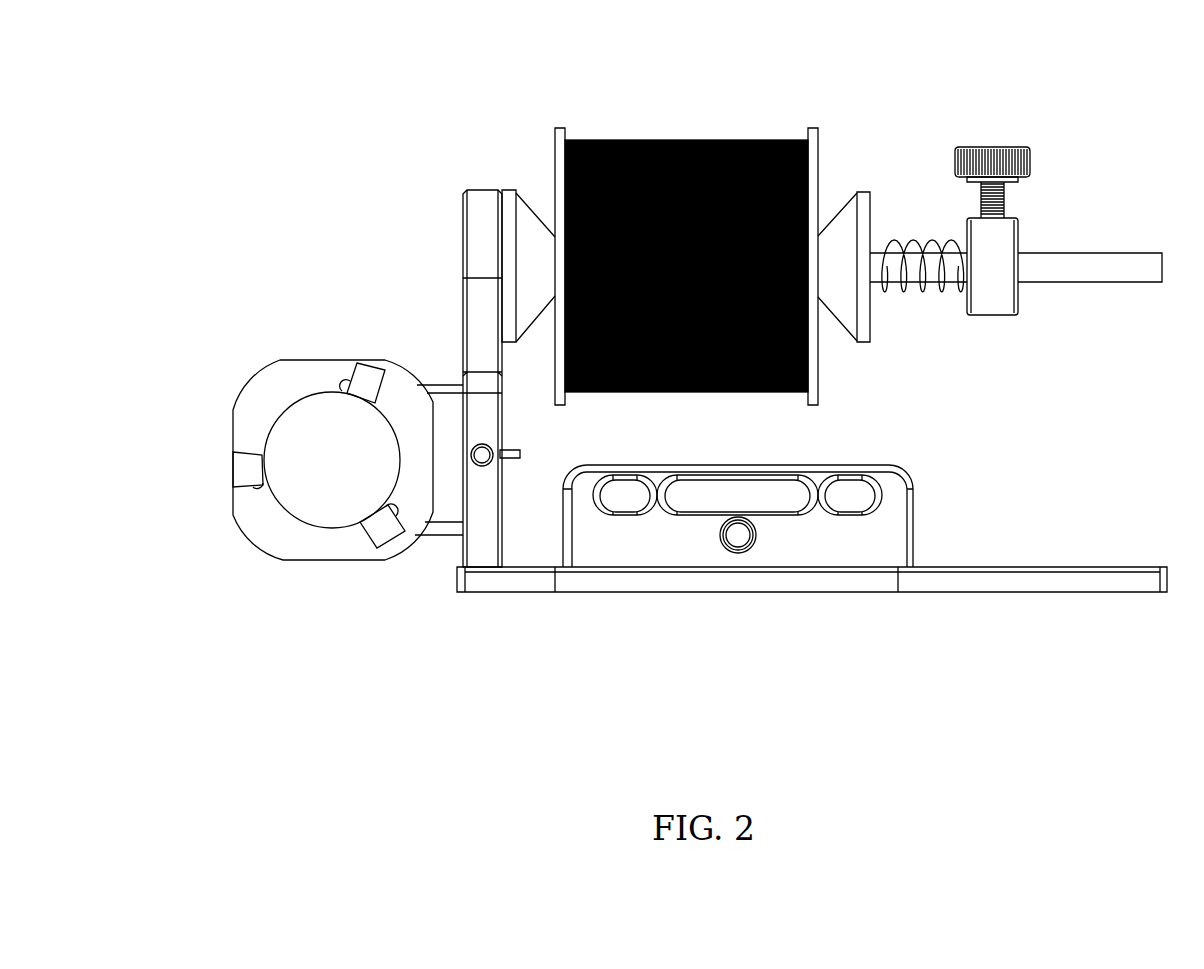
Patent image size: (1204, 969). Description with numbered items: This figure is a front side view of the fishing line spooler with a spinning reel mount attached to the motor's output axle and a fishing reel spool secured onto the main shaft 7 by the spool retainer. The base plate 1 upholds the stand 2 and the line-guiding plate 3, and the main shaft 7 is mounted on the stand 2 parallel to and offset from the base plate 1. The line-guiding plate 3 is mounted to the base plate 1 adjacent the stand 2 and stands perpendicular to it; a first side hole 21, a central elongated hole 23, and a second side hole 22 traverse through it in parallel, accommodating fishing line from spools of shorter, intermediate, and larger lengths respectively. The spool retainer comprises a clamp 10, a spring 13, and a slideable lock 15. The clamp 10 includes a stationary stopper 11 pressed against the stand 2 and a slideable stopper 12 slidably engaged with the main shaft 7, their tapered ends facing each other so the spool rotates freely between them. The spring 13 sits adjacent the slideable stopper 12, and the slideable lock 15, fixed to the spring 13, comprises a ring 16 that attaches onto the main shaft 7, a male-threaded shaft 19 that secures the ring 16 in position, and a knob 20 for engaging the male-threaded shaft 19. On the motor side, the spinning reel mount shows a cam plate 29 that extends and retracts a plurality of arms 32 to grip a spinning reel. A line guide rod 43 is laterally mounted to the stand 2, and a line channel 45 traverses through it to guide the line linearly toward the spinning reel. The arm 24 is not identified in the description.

The base plate 1 is at (1082, 575).
The stand 2 is at (484, 197).
The line-guiding plate 3 is at (915, 467).
The main shaft 7 is at (1130, 277).
The clamp 10 is at (839, 140).
The stationary stopper 11 is at (522, 205).
The slideable stopper 12 is at (850, 195).
The spring 13 is at (913, 292).
The slideable lock 15 is at (1031, 243).
The ring 16 is at (1017, 302).
The male-threaded shaft 19 is at (1005, 210).
The knob 20 is at (973, 146).
The first side hole 21 is at (633, 500).
The second side hole 22 is at (868, 500).
The central elongated hole 23 is at (750, 492).
The arm 24 is at (448, 390).
The cam plate 29 is at (293, 373).
The plurality of arms 32 is at (375, 383).
The line guide rod 43 is at (487, 465).
The line channel 45 is at (758, 544).